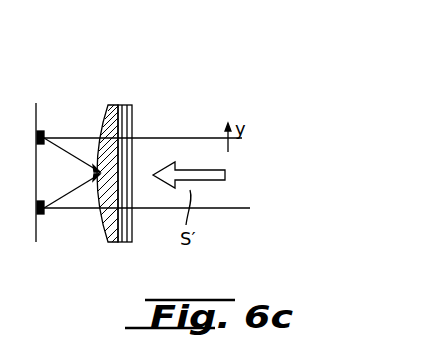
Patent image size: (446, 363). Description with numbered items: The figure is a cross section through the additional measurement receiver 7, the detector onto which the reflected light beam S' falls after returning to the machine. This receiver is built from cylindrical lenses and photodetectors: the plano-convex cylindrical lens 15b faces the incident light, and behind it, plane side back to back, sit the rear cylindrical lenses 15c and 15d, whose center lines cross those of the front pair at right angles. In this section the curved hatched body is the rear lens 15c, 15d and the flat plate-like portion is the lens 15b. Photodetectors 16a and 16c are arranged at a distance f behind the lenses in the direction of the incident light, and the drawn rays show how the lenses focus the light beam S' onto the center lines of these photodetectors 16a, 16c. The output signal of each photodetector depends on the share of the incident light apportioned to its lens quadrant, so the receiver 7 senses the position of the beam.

The additional measurement receiver 7 is at (137, 58).
The cylindrical lens 15b is at (132, 108).
The cylindrical lens 15c is at (112, 105).
The cylindrical lens 15d is at (108, 243).
The photodetector 16a is at (43, 131).
The photodetector 16c is at (41, 214).